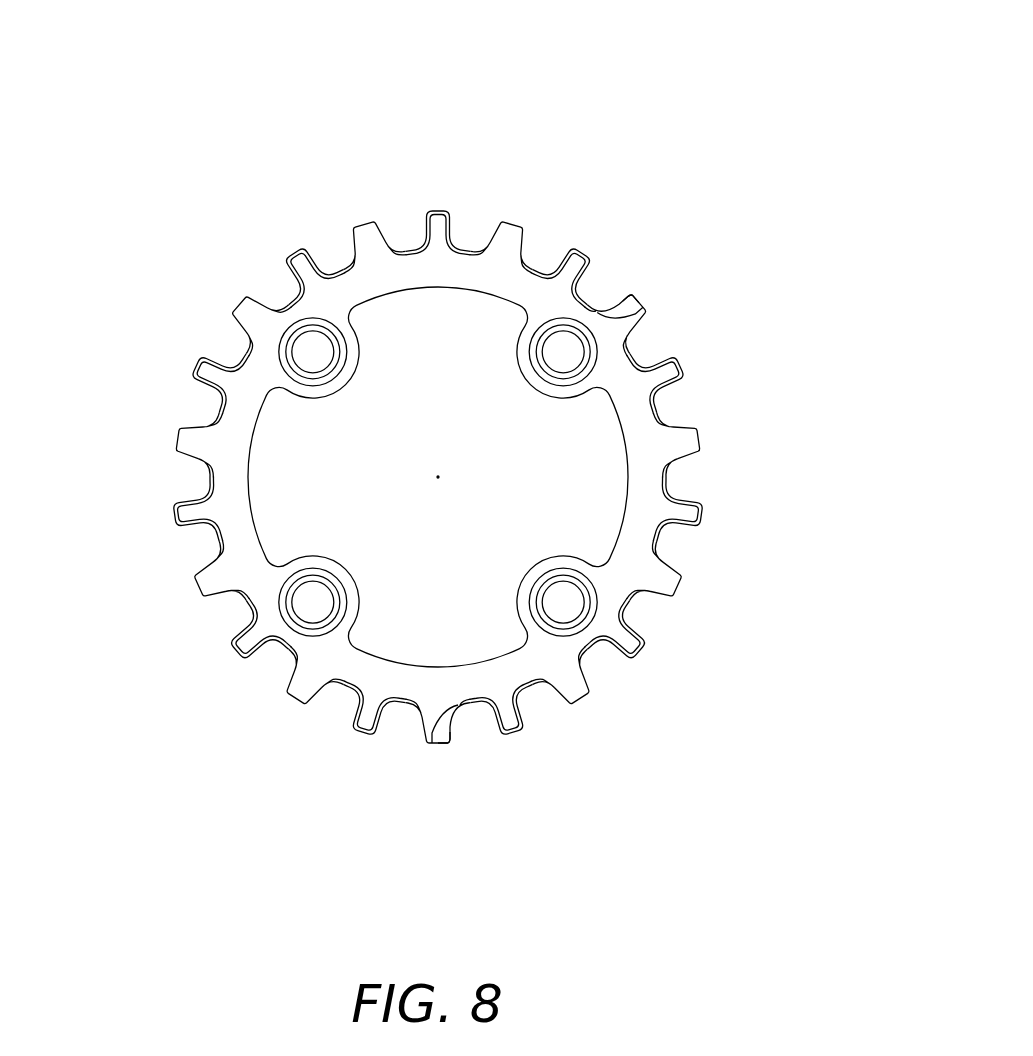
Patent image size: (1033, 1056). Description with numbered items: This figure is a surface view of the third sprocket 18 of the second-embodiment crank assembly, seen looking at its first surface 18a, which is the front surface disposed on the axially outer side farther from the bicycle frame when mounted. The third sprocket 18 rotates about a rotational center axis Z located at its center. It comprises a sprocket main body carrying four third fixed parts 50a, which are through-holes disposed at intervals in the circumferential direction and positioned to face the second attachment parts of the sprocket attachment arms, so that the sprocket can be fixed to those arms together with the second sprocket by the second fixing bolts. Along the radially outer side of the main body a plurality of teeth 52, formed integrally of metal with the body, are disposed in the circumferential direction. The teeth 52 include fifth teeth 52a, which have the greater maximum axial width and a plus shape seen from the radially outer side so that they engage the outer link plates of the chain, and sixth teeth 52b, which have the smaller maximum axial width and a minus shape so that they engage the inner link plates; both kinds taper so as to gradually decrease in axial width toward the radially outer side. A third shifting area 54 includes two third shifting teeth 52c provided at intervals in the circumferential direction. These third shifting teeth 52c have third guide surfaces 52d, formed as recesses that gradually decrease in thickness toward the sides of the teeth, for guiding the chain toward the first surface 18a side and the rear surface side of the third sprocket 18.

The third sprocket 18 is at (703, 183).
The first surface 18a is at (372, 682).
The third fixed parts 50a is at (472, 662).
The teeth 52 is at (297, 235).
The fifth tooth 52a is at (441, 210).
The sixth tooth 52b is at (364, 213).
The third shifting teeth 52c is at (650, 302).
The third guide surfaces 52d is at (622, 308).
The third shifting area 54 is at (643, 290).
The rotational center axis Z is at (441, 477).